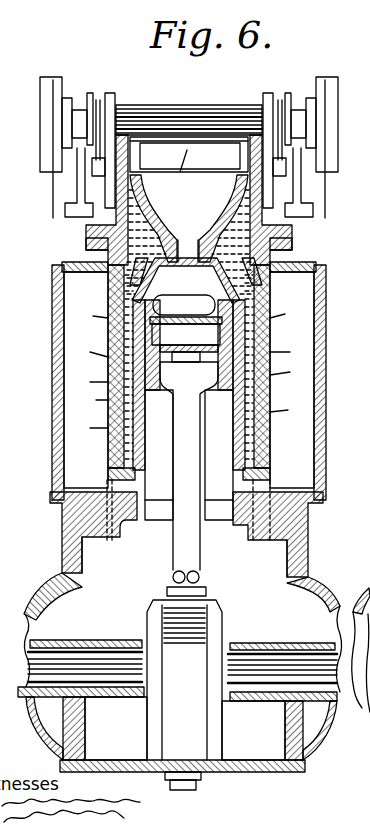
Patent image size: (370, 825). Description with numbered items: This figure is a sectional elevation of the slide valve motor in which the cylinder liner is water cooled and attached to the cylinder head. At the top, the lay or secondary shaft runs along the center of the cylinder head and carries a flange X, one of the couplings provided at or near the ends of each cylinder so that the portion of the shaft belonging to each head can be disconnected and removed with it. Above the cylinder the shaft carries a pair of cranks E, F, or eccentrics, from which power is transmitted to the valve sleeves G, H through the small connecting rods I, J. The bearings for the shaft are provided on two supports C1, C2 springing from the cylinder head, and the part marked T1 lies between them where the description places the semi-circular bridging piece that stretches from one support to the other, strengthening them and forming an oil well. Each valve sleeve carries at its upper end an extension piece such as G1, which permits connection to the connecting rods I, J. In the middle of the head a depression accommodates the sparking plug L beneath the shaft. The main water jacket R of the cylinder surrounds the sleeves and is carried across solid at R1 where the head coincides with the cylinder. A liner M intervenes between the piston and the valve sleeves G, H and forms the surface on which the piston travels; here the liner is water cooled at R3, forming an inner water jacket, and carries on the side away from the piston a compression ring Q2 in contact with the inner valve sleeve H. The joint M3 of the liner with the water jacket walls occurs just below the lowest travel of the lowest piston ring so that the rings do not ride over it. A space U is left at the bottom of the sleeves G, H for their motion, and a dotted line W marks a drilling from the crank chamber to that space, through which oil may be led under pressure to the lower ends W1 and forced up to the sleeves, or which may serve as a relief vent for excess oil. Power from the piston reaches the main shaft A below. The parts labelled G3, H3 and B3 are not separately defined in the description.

The flange X is at (52, 82).
The crank F is at (99, 102).
The crank E is at (189, 123).
The connecting rod I is at (66, 186).
The connecting rod J is at (96, 178).
The support C1 is at (189, 154).
The support C2 is at (190, 156).
The plate T' T1 is at (186, 172).
The extension piece G1 is at (86, 226).
The inner valve sleeve H is at (188, 245).
The valve sleeve G is at (100, 262).
The solid portion of water jacket R1 is at (52, 288).
The water jacket R is at (189, 380).
The compression ring Q2 is at (187, 311).
The wall G3 is at (187, 359).
The flange H3 is at (187, 363).
The space U is at (88, 404).
The water cooled liner R3 is at (90, 433).
The ring B3 is at (288, 406).
The drilling W is at (108, 472).
The liner M is at (157, 432).
The joint M3 is at (162, 486).
The lower end of drilling W1 is at (120, 549).
The main shaft A is at (104, 682).
The sparking plug L is at (188, 251).